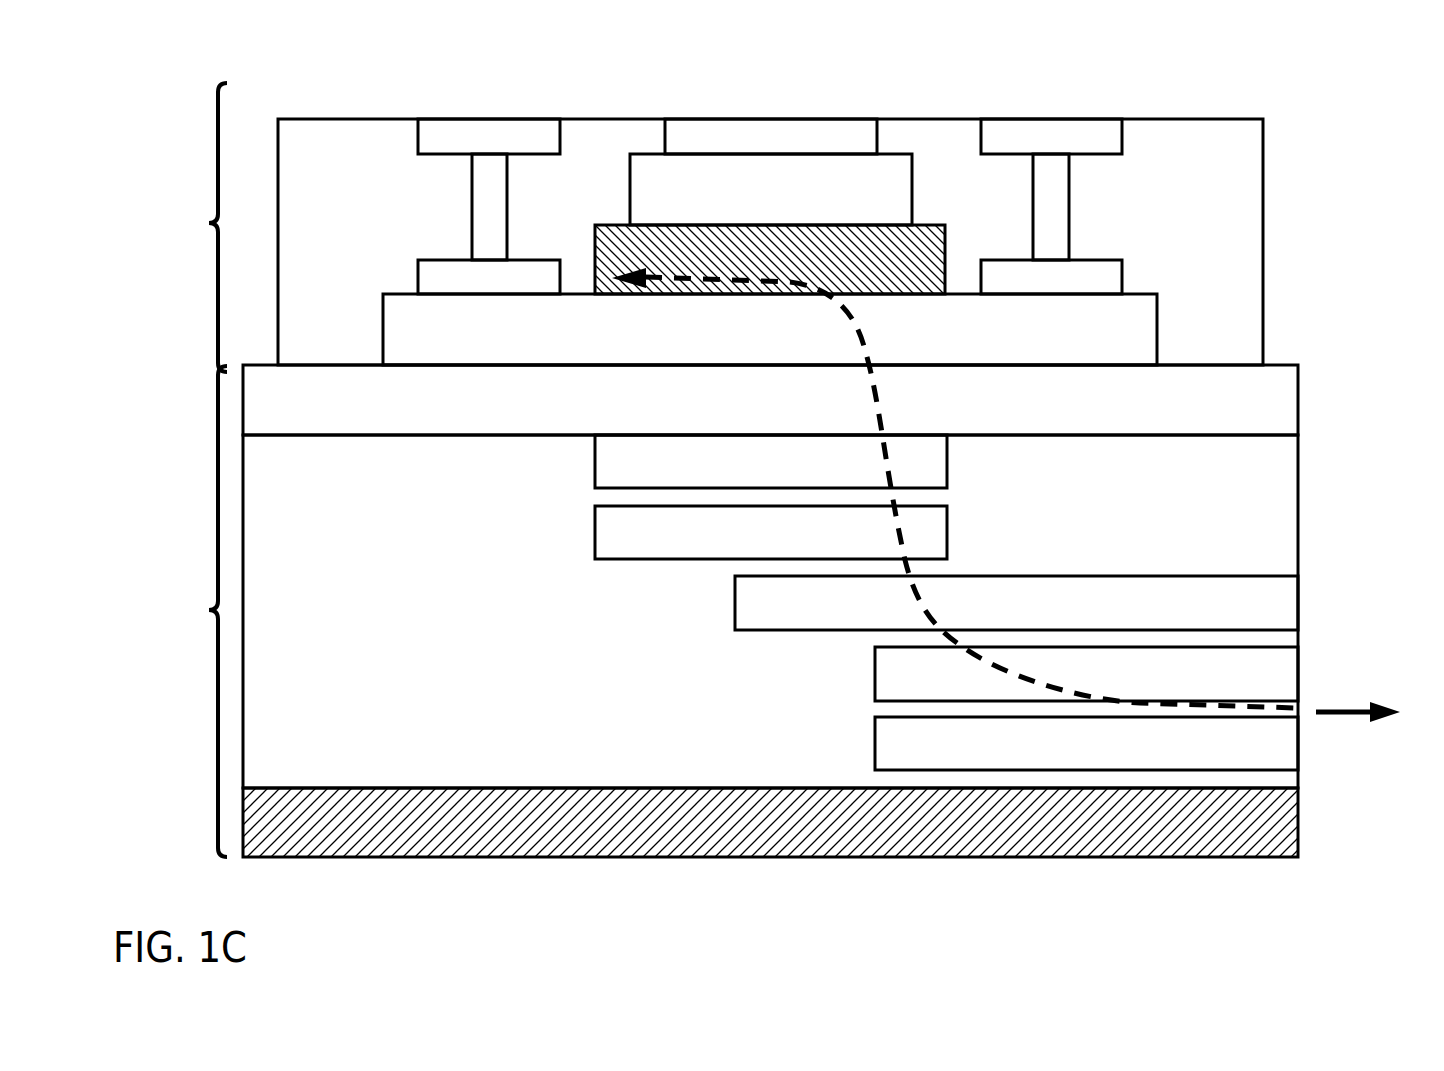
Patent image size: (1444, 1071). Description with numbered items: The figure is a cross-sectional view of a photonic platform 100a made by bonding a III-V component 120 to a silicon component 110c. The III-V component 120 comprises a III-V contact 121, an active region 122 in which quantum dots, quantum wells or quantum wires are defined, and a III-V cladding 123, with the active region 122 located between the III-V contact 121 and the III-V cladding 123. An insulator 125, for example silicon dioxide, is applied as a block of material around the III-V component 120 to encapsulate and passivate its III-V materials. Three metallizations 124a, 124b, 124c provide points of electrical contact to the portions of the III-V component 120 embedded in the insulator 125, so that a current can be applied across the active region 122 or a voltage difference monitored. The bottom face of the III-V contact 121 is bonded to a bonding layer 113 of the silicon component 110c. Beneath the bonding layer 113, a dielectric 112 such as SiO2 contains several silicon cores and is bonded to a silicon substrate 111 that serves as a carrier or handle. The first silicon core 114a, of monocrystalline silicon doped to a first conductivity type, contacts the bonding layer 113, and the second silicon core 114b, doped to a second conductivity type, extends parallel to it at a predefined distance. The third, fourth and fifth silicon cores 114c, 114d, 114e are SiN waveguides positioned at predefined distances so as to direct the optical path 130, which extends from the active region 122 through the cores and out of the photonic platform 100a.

The photonic platform 100a is at (1298, 136).
The III-V component 120 is at (196, 227).
The silicon component 110c is at (192, 611).
The insulator 125 is at (1248, 224).
The III-V contact 121 is at (398, 330).
The active region 122 is at (920, 238).
The III-V cladding 123 is at (640, 192).
The metallization 124a is at (480, 212).
The metallization 124b is at (1060, 210).
The metallization 124c is at (672, 136).
The bonding layer 113 is at (1280, 400).
The dielectric 112 is at (1280, 538).
The silicon substrate 111 is at (1280, 818).
The first silicon core 114a is at (620, 462).
The second silicon core 114b is at (620, 535).
The third silicon core 114c is at (762, 603).
The fourth silicon core 114d is at (902, 671).
The fifth silicon core 114e is at (902, 746).
The optical path 130 is at (927, 613).